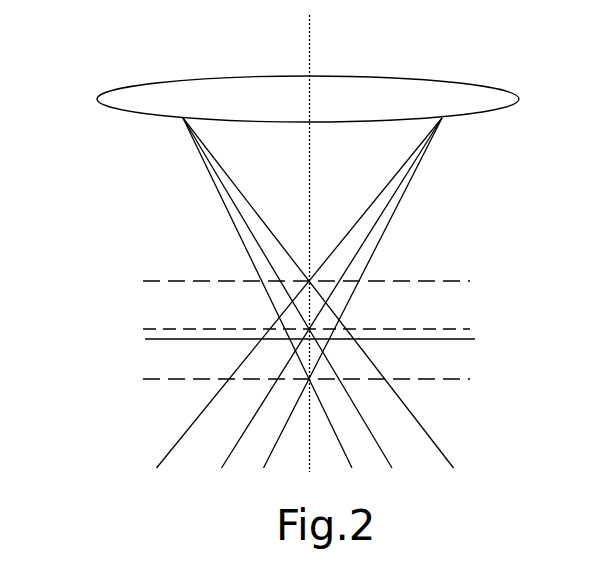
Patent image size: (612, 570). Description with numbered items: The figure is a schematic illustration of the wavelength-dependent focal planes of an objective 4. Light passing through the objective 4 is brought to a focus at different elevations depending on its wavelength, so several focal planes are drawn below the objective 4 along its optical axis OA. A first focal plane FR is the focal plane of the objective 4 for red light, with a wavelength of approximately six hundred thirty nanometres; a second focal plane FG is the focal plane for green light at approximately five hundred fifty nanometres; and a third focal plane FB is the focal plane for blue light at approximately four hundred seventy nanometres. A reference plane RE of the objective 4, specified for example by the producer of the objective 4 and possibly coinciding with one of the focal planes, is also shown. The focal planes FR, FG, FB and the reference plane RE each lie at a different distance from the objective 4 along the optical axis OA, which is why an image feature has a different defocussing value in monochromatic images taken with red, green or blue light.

The optical axis OA is at (313, 35).
The objective 4 is at (473, 88).
The first focal plane FR is at (470, 281).
The second focal plane FG is at (470, 329).
The reference plane RE is at (475, 339).
The third focal plane FB is at (468, 381).